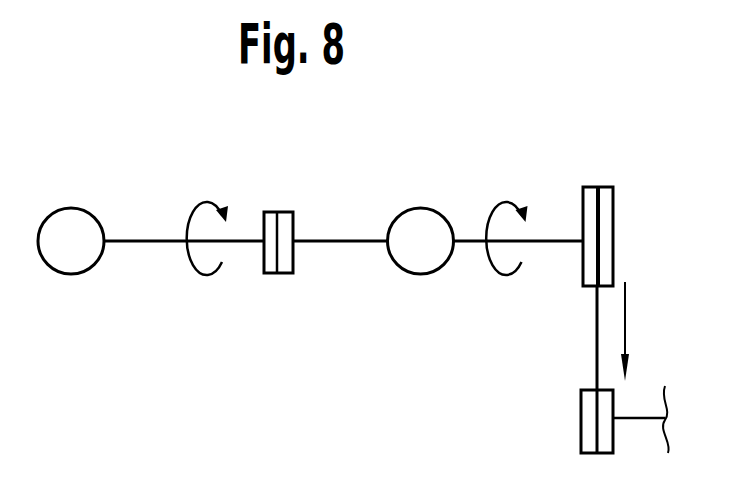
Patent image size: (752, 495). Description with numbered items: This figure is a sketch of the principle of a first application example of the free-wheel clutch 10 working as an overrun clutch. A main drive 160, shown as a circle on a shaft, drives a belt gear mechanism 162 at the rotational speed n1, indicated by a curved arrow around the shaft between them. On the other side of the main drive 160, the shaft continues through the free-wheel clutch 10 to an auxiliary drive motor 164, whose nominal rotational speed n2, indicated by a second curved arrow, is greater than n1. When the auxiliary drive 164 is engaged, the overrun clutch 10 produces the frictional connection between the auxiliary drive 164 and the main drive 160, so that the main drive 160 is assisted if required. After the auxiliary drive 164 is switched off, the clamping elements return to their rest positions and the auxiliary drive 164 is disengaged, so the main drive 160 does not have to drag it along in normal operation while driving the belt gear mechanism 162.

The auxiliary drive motor 164 is at (77, 208).
The main drive 160 is at (428, 207).
The free-wheel clutch 10 is at (273, 258).
The belt gear mechanism 162 is at (613, 252).
The rotational speed n1 is at (518, 220).
The nominal rotational speed n2 is at (246, 219).